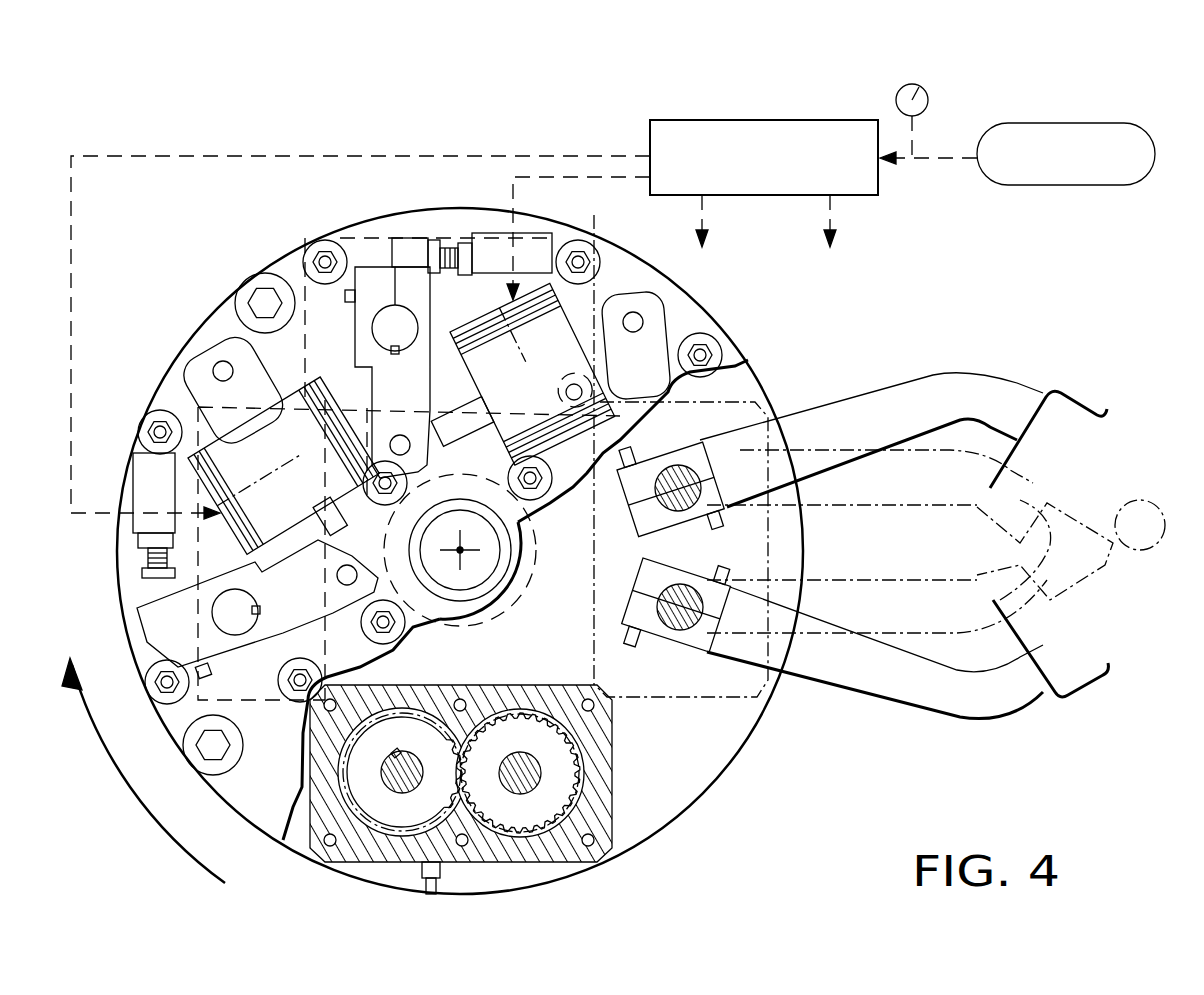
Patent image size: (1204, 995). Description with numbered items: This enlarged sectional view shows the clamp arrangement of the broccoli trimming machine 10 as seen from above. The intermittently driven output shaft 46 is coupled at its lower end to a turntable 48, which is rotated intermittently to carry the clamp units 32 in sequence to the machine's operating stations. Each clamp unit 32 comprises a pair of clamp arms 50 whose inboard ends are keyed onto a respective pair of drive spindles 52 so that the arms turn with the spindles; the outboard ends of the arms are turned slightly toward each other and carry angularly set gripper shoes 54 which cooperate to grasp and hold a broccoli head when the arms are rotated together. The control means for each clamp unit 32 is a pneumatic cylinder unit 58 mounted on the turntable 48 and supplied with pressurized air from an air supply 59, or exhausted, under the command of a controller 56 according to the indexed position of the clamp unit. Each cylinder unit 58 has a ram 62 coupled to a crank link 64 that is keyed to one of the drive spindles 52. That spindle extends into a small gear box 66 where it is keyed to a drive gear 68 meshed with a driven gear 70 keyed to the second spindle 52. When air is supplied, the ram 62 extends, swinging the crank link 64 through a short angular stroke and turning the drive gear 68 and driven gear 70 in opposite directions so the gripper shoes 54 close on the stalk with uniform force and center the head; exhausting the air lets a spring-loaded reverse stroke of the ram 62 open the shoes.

The broccoli trimming machine 10 is at (795, 318).
The clamp unit 32 is at (1028, 358).
The output shaft 46 is at (490, 568).
The turntable 48 is at (693, 782).
The clamp arm 50 is at (950, 383).
The drive spindle 52 is at (390, 766).
The gripper shoe 54 is at (1100, 408).
The controller 56 is at (757, 120).
The pneumatic cylinder unit 58 is at (268, 463).
The air supply 59 is at (1090, 123).
The ram 62 is at (305, 542).
The crank link 64 is at (417, 320).
The gear box 66 is at (722, 693).
The drive gear 68 is at (505, 728).
The driven gear 70 is at (417, 730).